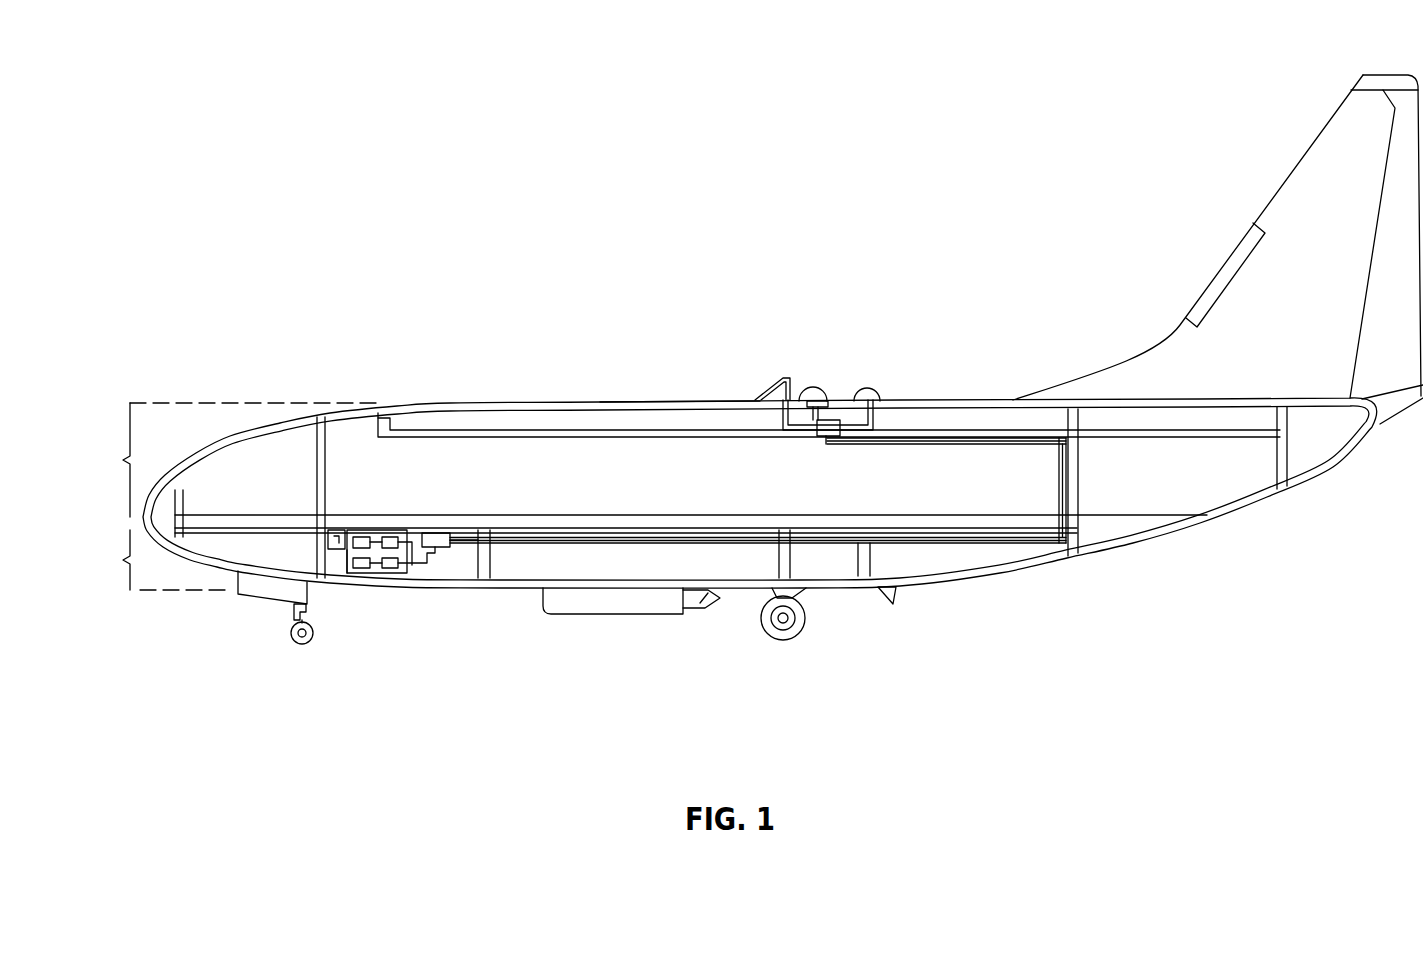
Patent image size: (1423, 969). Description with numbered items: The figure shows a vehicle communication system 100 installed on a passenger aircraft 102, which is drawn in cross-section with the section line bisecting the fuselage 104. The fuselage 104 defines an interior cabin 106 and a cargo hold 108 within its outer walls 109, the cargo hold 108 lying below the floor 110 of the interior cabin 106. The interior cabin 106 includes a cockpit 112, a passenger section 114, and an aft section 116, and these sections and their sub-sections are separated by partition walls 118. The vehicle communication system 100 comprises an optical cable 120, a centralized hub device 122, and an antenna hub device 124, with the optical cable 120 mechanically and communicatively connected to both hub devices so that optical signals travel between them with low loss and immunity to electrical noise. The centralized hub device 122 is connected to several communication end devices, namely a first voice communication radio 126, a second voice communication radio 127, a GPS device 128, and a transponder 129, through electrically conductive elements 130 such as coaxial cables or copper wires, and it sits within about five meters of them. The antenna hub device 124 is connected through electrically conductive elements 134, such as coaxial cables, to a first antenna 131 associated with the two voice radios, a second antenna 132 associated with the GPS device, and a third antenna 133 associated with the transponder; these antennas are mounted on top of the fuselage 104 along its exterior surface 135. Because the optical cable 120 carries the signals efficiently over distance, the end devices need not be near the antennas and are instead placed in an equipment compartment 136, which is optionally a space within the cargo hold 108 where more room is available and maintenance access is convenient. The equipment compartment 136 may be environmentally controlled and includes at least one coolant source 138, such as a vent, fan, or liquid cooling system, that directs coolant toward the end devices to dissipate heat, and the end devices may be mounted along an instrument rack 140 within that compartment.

The vehicle communication system 100 is at (829, 362).
The aircraft 102 is at (490, 402).
The fuselage 104 is at (628, 401).
The interior cabin 106 is at (123, 460).
The cargo hold 108 is at (123, 560).
The outer walls 109 is at (963, 401).
The floor 110 is at (722, 523).
The cockpit 112 is at (269, 458).
The passenger section 114 is at (444, 454).
The aft section 116 is at (1119, 427).
The partition walls 118 is at (326, 468).
The optical cable 120 is at (1010, 543).
The centralized hub device 122 is at (440, 548).
The antenna hub device 124 is at (820, 437).
The first voice communication radio 126 is at (358, 538).
The second voice communication radio 127 is at (388, 538).
The GPS device 128 is at (364, 573).
The transponder 129 is at (390, 572).
The electrically conductive elements 130 is at (415, 566).
The first antenna 131 is at (778, 389).
The second antenna 132 is at (812, 386).
The third antenna 133 is at (866, 388).
The electrically conductive elements 134 is at (873, 422).
The exterior surface 135 is at (706, 401).
The equipment compartment 136 is at (466, 538).
The coolant source 138 is at (327, 538).
The instrument rack 140 is at (347, 563).